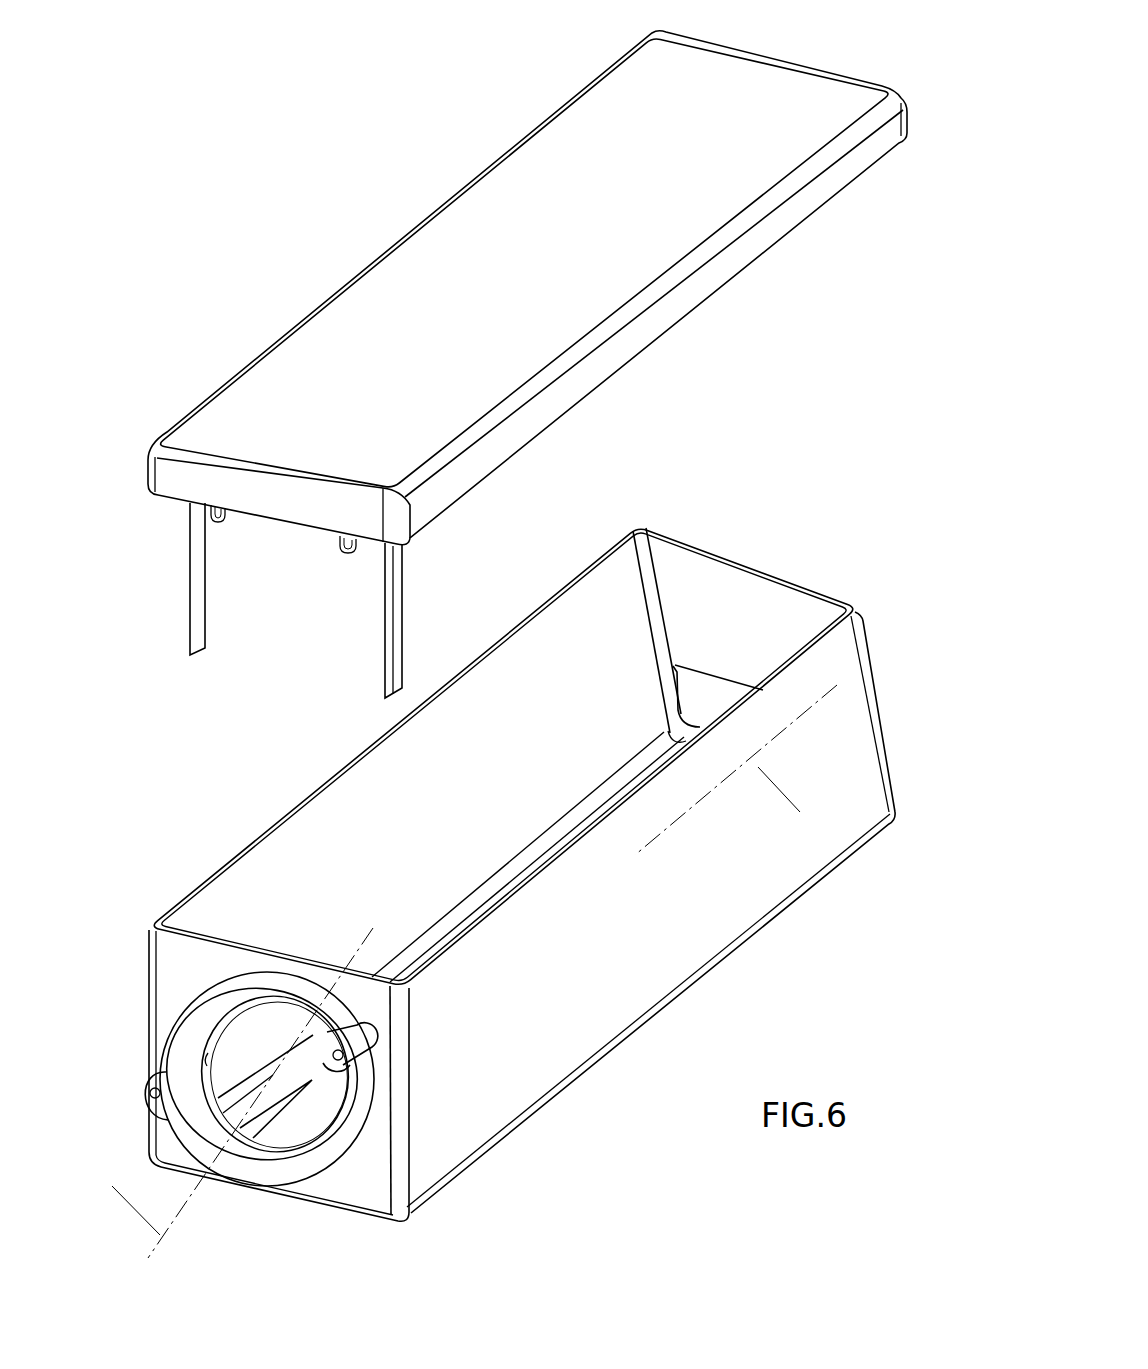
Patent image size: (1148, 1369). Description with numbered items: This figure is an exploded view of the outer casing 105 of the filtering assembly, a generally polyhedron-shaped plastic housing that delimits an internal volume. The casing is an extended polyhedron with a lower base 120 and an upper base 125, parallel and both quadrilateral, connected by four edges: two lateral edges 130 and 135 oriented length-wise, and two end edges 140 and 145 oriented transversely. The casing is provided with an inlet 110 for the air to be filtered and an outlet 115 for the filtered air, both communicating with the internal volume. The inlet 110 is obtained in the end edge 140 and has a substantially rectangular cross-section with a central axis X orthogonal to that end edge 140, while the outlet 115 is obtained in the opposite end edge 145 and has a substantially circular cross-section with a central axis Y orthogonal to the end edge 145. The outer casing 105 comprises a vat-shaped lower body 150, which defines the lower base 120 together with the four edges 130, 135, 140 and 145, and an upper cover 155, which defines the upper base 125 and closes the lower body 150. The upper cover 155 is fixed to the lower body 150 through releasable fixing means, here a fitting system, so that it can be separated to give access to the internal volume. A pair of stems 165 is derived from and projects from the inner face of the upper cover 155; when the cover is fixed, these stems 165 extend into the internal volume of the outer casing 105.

The outer casing 105 is at (220, 193).
The inlet 110 is at (697, 667).
The outlet 115 is at (333, 990).
The lower base 120 is at (548, 1101).
The upper base 125 is at (730, 115).
The lateral edge 130 is at (637, 962).
The lateral edge 135 is at (327, 777).
The end edge 140 is at (743, 558).
The end edge 145 is at (362, 1168).
The lower body 150 is at (193, 817).
The upper cover 155 is at (500, 218).
The stems 165 is at (192, 570).